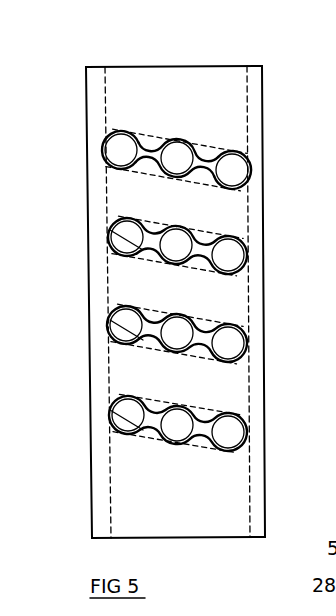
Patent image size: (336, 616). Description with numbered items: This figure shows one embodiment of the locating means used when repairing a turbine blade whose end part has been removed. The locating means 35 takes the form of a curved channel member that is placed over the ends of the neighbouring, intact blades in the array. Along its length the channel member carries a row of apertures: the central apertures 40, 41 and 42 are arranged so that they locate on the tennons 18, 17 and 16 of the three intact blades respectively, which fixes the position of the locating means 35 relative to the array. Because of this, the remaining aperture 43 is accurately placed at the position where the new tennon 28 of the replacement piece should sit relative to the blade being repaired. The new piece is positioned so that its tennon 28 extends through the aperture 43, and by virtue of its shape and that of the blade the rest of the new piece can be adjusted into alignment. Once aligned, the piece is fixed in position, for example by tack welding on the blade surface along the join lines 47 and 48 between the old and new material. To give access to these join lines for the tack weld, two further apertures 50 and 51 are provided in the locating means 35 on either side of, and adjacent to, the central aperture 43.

The locating means 35 is at (163, 90).
The further aperture 50 is at (128, 133).
The join line 48 is at (148, 168).
The new tennon 28 is at (181, 150).
The further aperture 51 is at (246, 140).
The join line 47 is at (245, 162).
The aperture 43 is at (160, 168).
The tennon 16 is at (182, 250).
The tennon 17 is at (182, 337).
The tennon 18 is at (183, 428).
The central aperture 42 is at (157, 250).
The central aperture 41 is at (157, 337).
The central aperture 40 is at (157, 425).